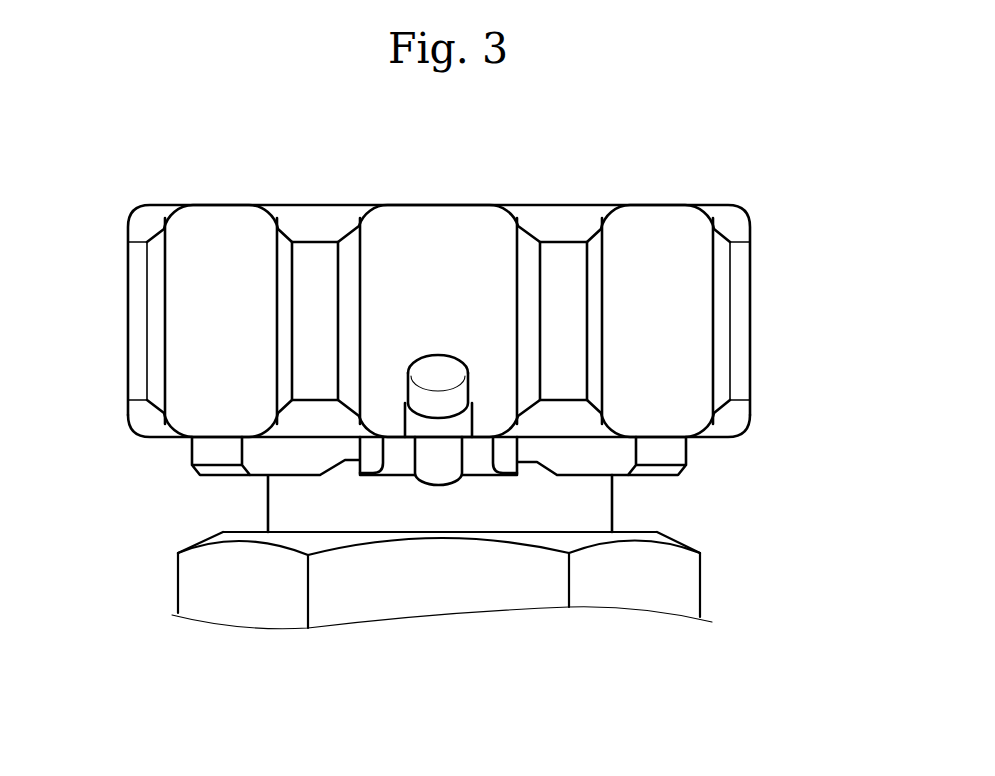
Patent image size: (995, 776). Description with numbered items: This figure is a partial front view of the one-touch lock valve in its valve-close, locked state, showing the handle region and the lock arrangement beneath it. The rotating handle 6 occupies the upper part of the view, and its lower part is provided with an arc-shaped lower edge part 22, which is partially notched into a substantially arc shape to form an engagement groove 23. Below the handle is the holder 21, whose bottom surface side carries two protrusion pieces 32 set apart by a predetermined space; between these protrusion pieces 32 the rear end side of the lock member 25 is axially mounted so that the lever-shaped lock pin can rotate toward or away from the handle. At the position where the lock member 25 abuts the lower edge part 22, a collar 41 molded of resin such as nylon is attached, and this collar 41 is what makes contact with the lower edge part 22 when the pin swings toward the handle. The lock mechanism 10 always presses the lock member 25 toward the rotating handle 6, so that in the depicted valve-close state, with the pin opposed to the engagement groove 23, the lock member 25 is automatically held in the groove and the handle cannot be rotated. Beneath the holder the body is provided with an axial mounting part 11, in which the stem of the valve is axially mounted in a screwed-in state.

The rotating handle 6 is at (433, 238).
The lower edge part 22 is at (708, 438).
The lock member 25 is at (423, 373).
The engagement groove 23 is at (471, 418).
The collar 41 is at (437, 437).
The lock mechanism 10 is at (403, 478).
The protrusion pieces 32 is at (395, 450).
The holder 21 is at (572, 458).
The axial mounting part 11 is at (615, 502).